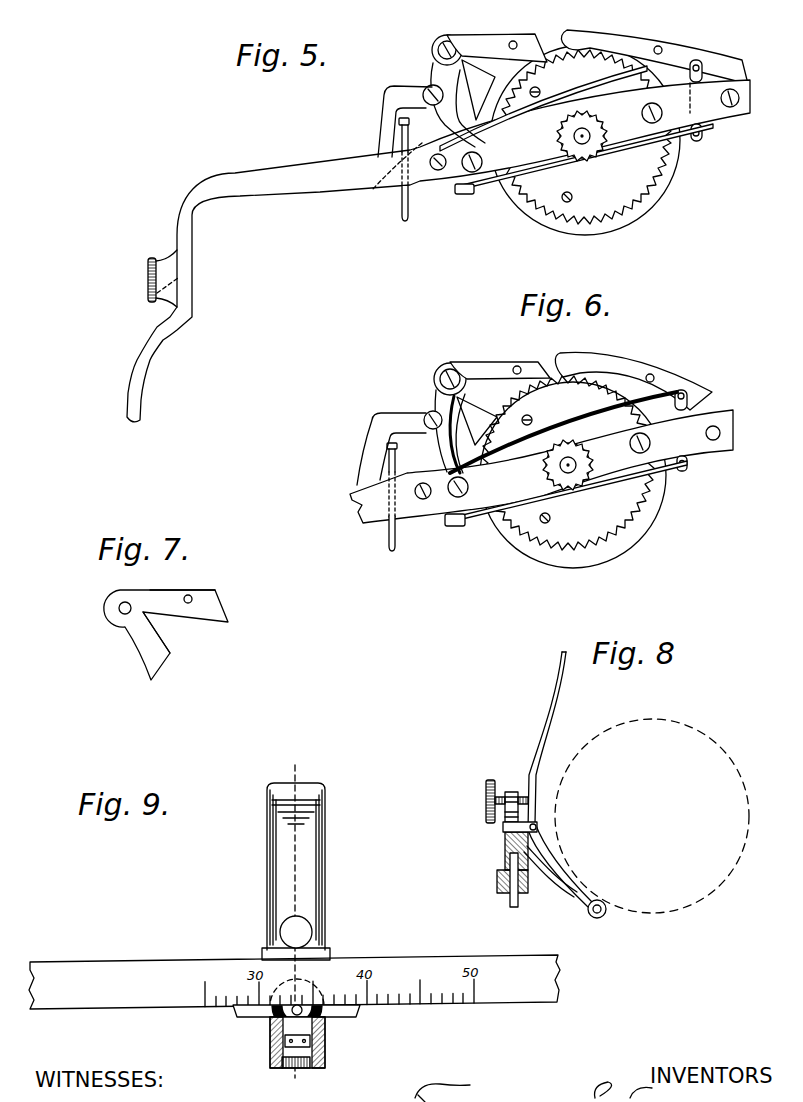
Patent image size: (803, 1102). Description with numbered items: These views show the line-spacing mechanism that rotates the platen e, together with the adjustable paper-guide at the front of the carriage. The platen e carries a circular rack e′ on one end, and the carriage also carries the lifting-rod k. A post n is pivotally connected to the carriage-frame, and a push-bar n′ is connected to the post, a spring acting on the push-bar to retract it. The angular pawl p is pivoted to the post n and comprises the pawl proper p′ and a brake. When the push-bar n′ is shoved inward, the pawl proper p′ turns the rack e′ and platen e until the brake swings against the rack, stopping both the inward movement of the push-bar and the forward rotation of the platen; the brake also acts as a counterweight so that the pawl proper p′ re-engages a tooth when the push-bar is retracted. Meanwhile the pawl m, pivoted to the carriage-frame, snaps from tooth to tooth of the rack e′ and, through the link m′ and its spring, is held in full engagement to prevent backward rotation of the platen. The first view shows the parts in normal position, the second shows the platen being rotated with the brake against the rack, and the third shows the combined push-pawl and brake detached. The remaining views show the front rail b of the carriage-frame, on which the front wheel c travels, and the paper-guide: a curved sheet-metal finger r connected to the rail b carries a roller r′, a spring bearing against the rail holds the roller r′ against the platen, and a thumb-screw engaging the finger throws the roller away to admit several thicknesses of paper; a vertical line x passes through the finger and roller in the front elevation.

In FIG. 5, the lifting-rod k is at (438, 251).
In FIG. 6, the lifting-rod k is at (541, 466).
In FIG. 5, the post n is at (446, 96).
In FIG. 6, the post n is at (444, 431).
In FIG. 5, the push-bar n′ is at (282, 196).
In FIG. 6, the push-bar n′ is at (391, 449).
In FIG. 5, the angular pawl p is at (448, 34).
In FIG. 6, the angular pawl p is at (450, 379).
In FIG. 7, the angular pawl p is at (152, 635).
In FIG. 5, the pawl proper p′ is at (497, 32).
In FIG. 6, the pawl proper p′ is at (500, 359).
In FIG. 7, the pawl proper p′ is at (202, 597).
In FIG. 5, the platen e is at (585, 140).
In FIG. 6, the platen e is at (577, 475).
In FIG. 5, the circular rack e′ is at (584, 137).
In FIG. 6, the circular rack e′ is at (568, 463).
In FIG. 5, the pawl m is at (654, 52).
In FIG. 6, the pawl m is at (633, 379).
In FIG. 5, the link m′ is at (722, 94).
In FIG. 6, the link m′ is at (688, 398).
In FIG. 8, the curved sheet-metal finger r is at (560, 779).
In FIG. 9, the curved sheet-metal finger r is at (302, 871).
In FIG. 8, the roller r′ is at (600, 917).
In FIG. 9, the roller r′ is at (320, 1068).
In FIG. 8, the rail b is at (503, 842).
In FIG. 9, the front wheel c is at (282, 1022).
In FIG. 9, the axis line x is at (294, 911).